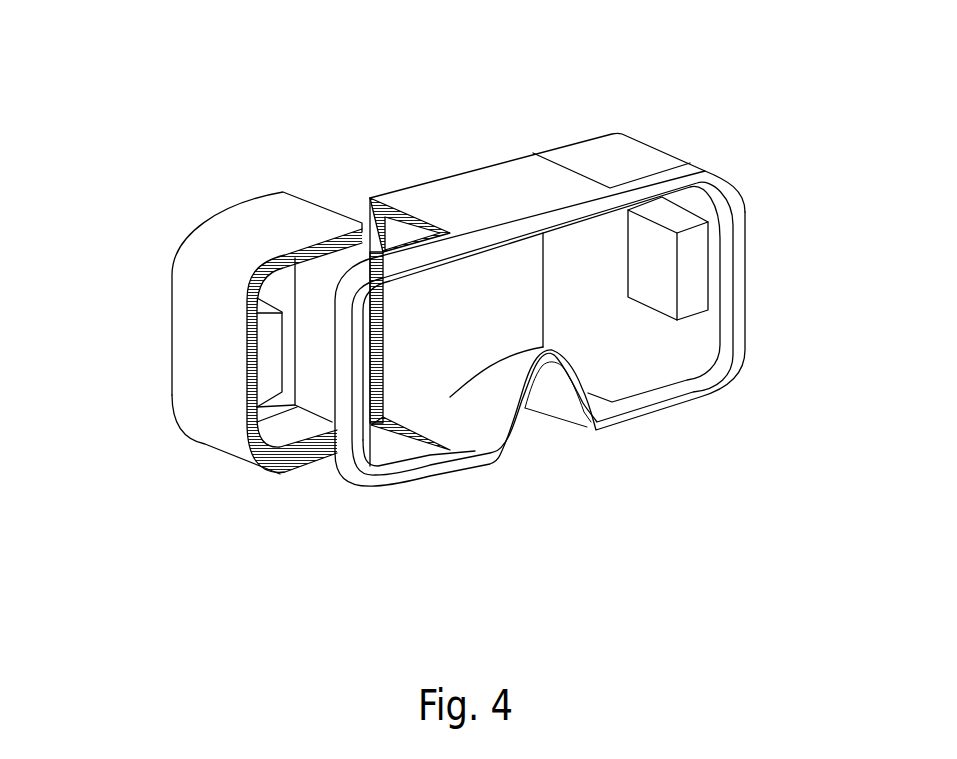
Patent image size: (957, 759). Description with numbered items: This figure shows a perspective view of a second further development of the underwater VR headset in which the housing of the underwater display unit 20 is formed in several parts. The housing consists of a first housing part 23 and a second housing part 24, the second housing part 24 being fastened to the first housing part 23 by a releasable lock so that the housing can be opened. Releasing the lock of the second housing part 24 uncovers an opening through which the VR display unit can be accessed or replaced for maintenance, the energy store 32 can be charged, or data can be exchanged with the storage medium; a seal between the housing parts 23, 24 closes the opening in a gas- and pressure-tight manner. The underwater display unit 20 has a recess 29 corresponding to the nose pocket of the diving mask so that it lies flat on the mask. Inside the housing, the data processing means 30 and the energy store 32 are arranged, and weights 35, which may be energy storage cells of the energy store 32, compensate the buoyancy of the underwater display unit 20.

The underwater display unit 20 is at (463, 293).
The first housing part 23 is at (532, 182).
The second housing part 24 is at (212, 328).
The recess 29 is at (542, 418).
The data processing means 30 is at (567, 384).
The energy store 32 is at (567, 384).
The weights 35 is at (272, 375).